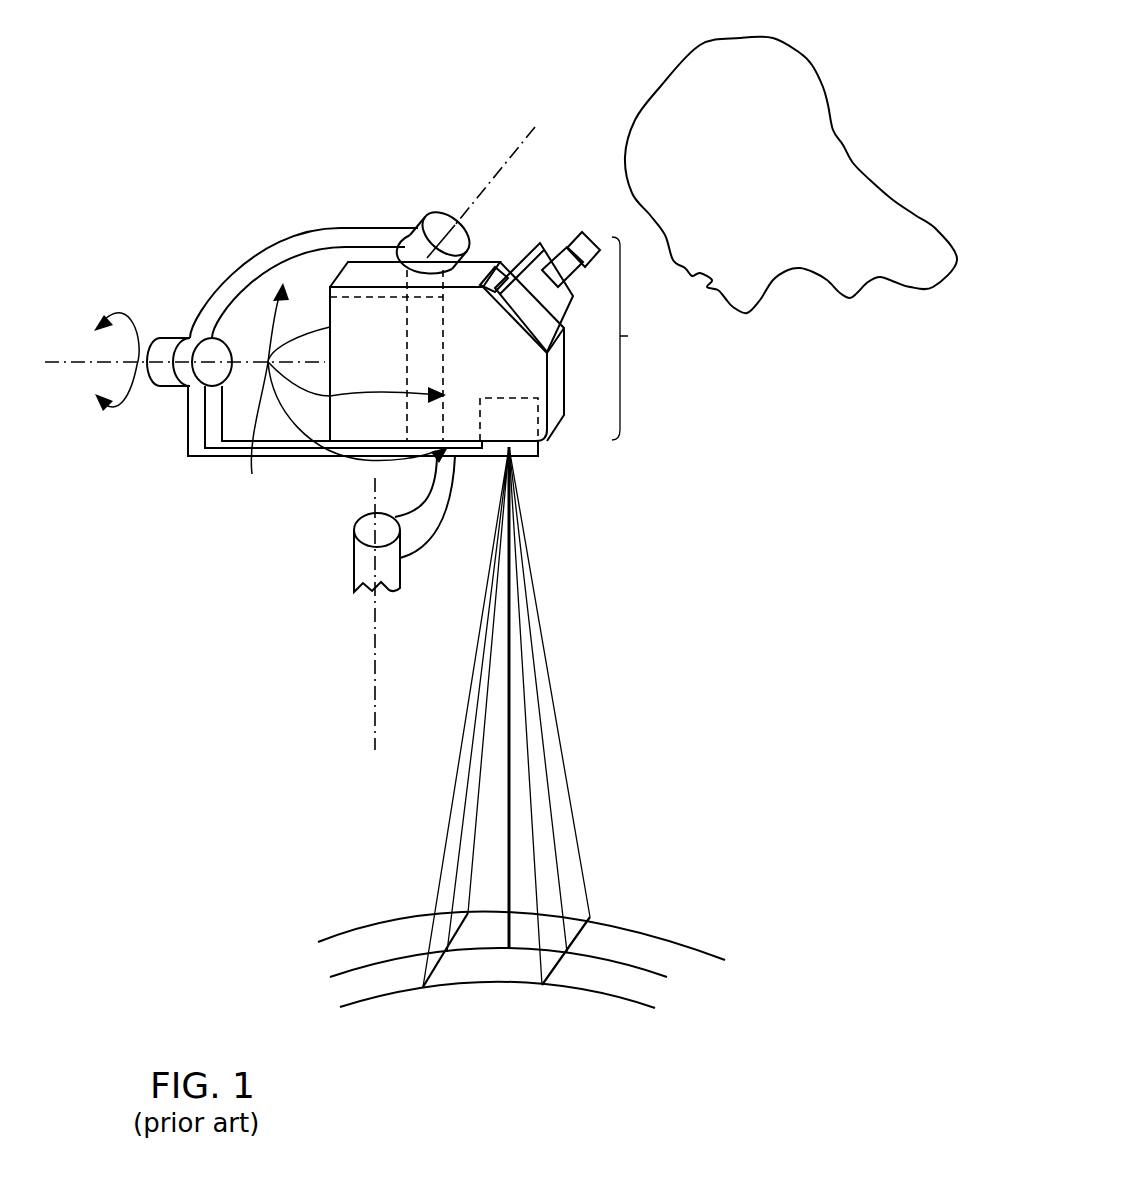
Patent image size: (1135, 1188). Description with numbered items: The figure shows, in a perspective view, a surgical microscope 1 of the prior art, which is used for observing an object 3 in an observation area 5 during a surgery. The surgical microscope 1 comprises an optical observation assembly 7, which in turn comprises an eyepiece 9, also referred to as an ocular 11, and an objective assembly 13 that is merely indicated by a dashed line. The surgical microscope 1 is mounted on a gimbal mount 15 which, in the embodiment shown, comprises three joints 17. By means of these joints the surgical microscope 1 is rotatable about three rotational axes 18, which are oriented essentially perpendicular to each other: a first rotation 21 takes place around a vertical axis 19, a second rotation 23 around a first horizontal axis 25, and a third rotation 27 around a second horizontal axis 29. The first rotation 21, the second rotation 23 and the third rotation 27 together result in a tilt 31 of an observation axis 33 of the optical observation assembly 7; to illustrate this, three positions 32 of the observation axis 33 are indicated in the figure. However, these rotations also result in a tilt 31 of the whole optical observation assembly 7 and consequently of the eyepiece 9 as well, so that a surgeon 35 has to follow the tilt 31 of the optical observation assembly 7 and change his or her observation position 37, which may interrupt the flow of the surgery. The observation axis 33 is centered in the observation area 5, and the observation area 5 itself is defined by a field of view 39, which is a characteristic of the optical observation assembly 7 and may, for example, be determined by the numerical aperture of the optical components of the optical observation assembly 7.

The surgical microscope 1 is at (302, 218).
The object 3 is at (640, 938).
The observation area 5 is at (570, 920).
The optical observation assembly 7 is at (629, 338).
The eyepiece 9 is at (540, 270).
The ocular 11 is at (553, 266).
The objective assembly 13 is at (521, 420).
The gimbal mount 15 is at (201, 276).
The joints 17 is at (446, 216).
The rotational axes 18 is at (317, 614).
The vertical axis 19 is at (375, 688).
The first rotation 21 is at (300, 456).
The second rotation 23 is at (342, 397).
The first horizontal axis 25 is at (494, 164).
The third rotation 27 is at (112, 414).
The second horizontal axis 29 is at (57, 366).
The tilt 31 is at (560, 647).
The positions 32 is at (554, 822).
The observation axis 33 is at (511, 703).
The surgeon 35 is at (764, 174).
The observation position 37 is at (650, 110).
The field of view 39 is at (560, 778).